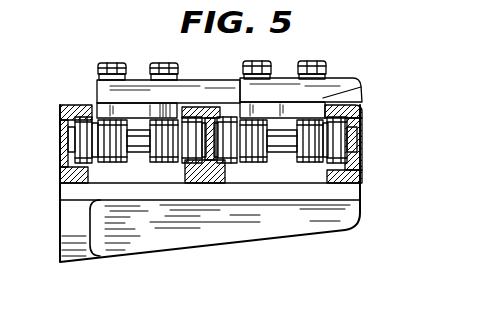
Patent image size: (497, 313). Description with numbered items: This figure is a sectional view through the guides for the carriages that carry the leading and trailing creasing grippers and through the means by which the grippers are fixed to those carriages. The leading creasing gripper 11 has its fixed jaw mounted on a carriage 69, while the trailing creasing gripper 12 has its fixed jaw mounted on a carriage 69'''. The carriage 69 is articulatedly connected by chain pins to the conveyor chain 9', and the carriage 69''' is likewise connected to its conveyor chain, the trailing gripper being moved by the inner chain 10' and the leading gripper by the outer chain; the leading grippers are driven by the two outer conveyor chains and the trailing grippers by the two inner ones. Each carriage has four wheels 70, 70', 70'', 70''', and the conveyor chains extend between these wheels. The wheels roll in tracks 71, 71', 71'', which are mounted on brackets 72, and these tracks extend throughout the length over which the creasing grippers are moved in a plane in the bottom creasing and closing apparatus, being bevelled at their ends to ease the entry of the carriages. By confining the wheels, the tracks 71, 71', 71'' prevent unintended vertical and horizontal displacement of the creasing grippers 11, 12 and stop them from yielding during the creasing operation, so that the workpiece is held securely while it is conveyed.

The leading creasing gripper 11 is at (97, 80).
The trailing creasing gripper 12 is at (333, 87).
The carriage 69 is at (108, 92).
The carriage 69''' is at (333, 88).
The track 71 is at (56, 144).
The track 71' is at (198, 196).
The track 71'' is at (373, 141).
The bracket 72 is at (66, 198).
The conveyor chain 9' is at (123, 177).
The conveyor chain 10' is at (281, 178).
The wheel 70 is at (239, 197).
The wheel 70' is at (244, 197).
The wheel 70'' is at (371, 151).
The wheel 70''' is at (405, 156).